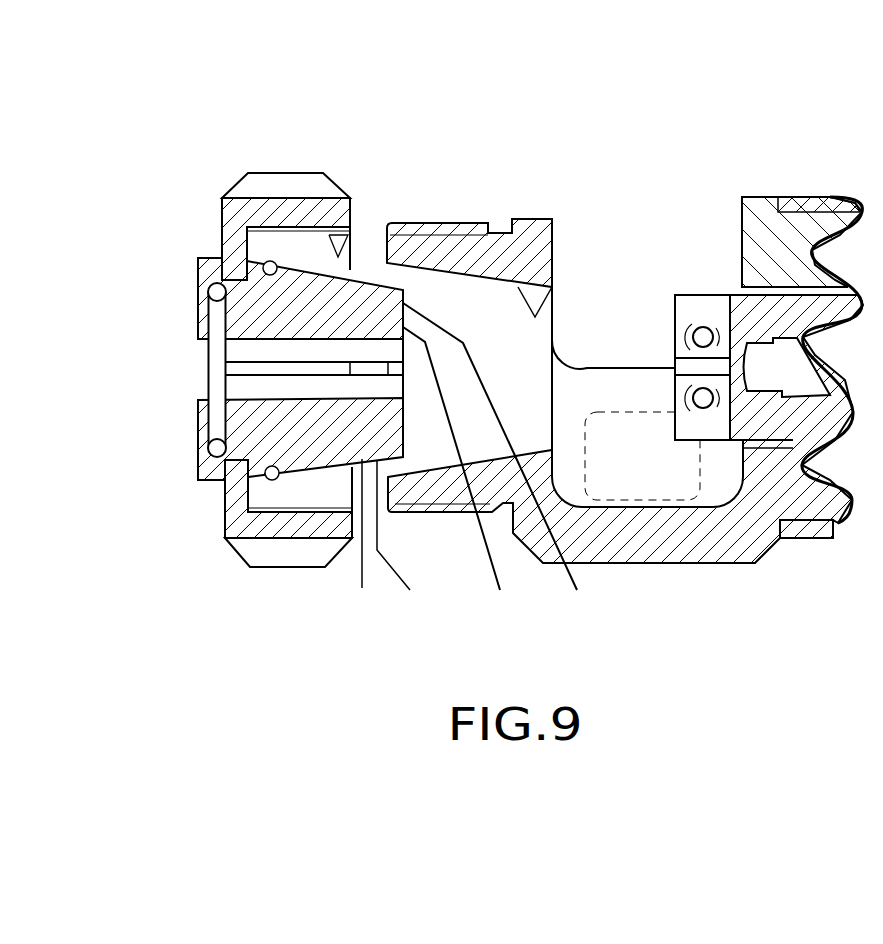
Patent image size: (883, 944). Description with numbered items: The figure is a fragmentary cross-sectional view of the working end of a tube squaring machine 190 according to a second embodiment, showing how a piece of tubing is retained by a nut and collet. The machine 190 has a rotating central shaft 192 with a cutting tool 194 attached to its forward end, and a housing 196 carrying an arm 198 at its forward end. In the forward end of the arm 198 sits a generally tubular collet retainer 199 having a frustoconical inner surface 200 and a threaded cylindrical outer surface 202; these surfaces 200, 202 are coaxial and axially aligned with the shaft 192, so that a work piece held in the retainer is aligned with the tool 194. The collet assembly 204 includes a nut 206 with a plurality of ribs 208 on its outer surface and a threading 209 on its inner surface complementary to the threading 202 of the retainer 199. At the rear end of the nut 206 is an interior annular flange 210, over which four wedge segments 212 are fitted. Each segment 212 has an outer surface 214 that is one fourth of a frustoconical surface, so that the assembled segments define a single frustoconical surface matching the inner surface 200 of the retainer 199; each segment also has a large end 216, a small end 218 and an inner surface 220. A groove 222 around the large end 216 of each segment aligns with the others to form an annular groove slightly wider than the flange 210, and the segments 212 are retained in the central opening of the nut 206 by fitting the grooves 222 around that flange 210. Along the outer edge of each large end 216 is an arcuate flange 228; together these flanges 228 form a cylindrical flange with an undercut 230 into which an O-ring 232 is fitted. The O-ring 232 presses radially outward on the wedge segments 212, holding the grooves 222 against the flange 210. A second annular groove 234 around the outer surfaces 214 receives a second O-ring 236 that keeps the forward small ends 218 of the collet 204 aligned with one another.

The tube squaring machine 190 is at (697, 565).
The rotating central shaft 192 is at (800, 388).
The cutting tool 194 is at (720, 430).
The housing 196 is at (763, 197).
The arm 198 is at (640, 563).
The collet retainer 199 is at (539, 174).
The frustoconical inner surface 200 is at (553, 287).
The threaded cylindrical outer surface 202 is at (490, 223).
The collet assembly 204 is at (230, 183).
The nut 206 is at (348, 193).
The ribs 208 is at (287, 172).
The threading 209 is at (350, 227).
The interior annular flange 210 is at (222, 243).
The wedge segments 212 is at (454, 477).
The outer surface 214 is at (362, 543).
The large end 216 is at (198, 330).
The small end 218 is at (504, 465).
The inner surface 220 is at (299, 510).
The groove 222 is at (225, 278).
The arcuate flange 228 is at (198, 467).
The undercut 230 is at (171, 430).
The O-ring 232 is at (208, 292).
The second annular groove 234 is at (267, 261).
The second O-ring 236 is at (198, 496).